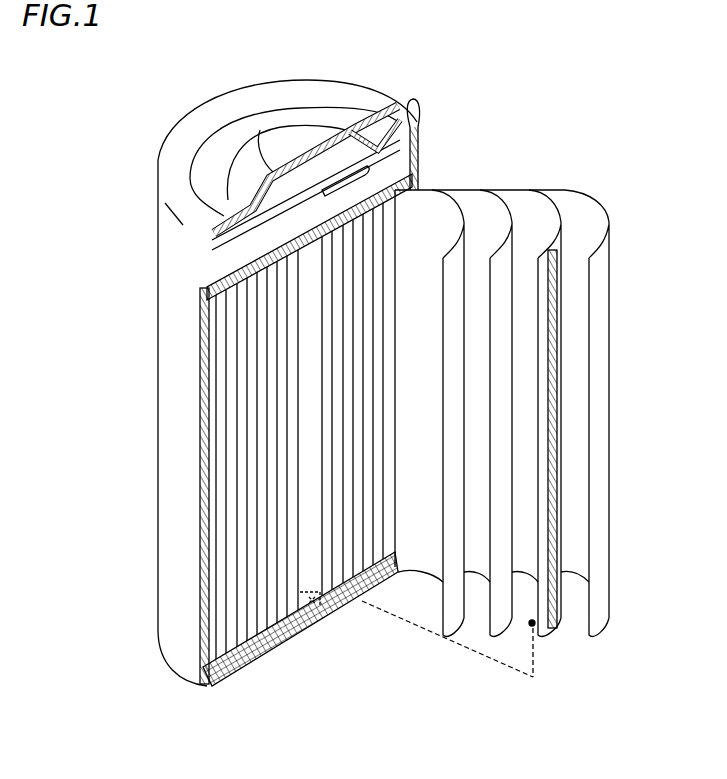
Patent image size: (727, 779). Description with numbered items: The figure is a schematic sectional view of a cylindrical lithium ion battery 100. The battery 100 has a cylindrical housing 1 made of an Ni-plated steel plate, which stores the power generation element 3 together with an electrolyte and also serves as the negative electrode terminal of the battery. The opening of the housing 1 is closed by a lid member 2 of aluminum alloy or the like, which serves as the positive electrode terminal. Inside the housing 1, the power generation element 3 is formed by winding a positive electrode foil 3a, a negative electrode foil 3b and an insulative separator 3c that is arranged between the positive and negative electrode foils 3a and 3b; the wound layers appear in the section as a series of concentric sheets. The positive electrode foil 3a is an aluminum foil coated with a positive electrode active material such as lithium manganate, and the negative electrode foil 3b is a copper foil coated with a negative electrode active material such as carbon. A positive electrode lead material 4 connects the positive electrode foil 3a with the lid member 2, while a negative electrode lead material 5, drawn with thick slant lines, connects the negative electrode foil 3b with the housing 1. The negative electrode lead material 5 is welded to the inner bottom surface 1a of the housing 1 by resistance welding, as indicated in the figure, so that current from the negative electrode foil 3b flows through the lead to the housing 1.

The battery 100 is at (603, 125).
The housing 1 is at (172, 426).
The inner bottom surface 1a is at (292, 637).
The lid member 2 is at (237, 137).
The power generation element 3 is at (657, 345).
The positive electrode foil 3a is at (453, 364).
The negative electrode foil 3b is at (560, 428).
The separator 3c is at (600, 274).
The positive electrode lead material 4 is at (304, 222).
The negative electrode lead material 5 is at (561, 543).